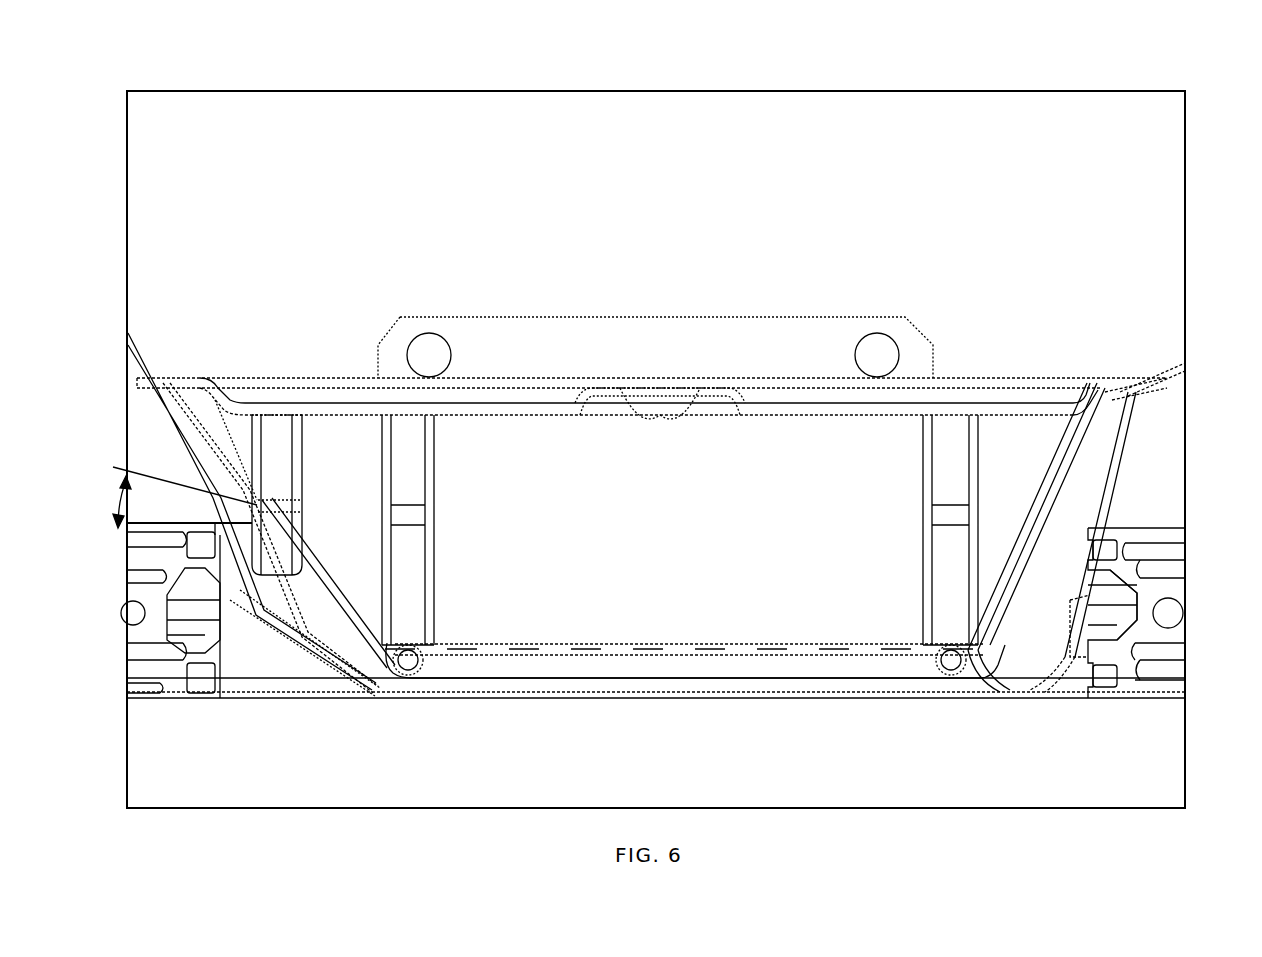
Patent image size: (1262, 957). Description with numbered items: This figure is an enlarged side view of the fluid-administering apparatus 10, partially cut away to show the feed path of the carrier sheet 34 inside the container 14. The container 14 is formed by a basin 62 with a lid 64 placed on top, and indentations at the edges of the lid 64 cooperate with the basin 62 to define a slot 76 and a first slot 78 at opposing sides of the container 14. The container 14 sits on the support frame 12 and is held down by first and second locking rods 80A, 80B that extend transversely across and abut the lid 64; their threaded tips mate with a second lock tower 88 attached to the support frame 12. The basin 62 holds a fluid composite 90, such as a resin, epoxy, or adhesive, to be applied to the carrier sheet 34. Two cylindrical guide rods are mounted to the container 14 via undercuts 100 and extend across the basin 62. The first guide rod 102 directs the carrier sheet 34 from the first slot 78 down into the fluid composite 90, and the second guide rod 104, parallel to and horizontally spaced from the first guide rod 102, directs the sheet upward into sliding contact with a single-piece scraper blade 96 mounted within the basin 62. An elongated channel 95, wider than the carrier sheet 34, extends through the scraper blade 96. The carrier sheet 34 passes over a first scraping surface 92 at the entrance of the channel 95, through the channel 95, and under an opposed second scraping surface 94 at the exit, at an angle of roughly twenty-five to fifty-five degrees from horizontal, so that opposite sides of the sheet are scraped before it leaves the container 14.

The fluid-administering apparatus 10 is at (485, 78).
The support frame 12 is at (1130, 528).
The container 14 is at (1012, 364).
The carrier sheet 34 is at (665, 682).
The basin 62 is at (1115, 453).
The lid 64 is at (962, 378).
The slot 76 is at (182, 378).
The first slot 78 is at (1125, 378).
The first locking rod 80A is at (415, 338).
The second locking rod 80B is at (862, 335).
The second lock tower 88 is at (530, 317).
The fluid composite 90 is at (793, 652).
The first scraping surface 92 is at (285, 518).
The second scraping surface 94 is at (250, 504).
The elongated channel 95 is at (300, 505).
The scraper blade 96 is at (273, 425).
The undercuts 100 is at (415, 555).
The first guide rod 102 is at (940, 660).
The second guide rod 104 is at (418, 652).